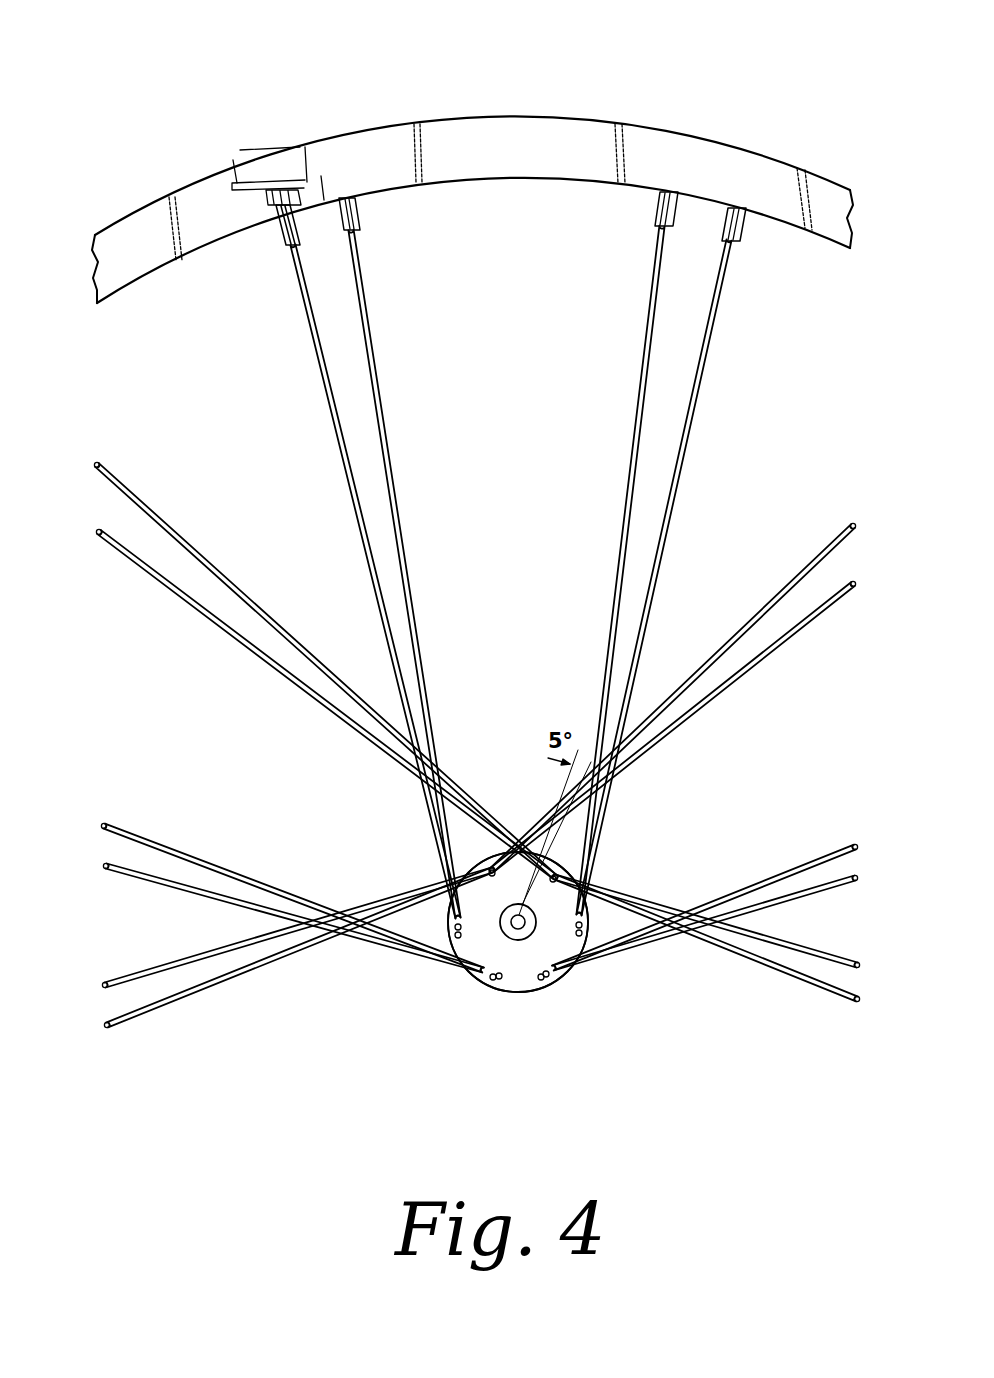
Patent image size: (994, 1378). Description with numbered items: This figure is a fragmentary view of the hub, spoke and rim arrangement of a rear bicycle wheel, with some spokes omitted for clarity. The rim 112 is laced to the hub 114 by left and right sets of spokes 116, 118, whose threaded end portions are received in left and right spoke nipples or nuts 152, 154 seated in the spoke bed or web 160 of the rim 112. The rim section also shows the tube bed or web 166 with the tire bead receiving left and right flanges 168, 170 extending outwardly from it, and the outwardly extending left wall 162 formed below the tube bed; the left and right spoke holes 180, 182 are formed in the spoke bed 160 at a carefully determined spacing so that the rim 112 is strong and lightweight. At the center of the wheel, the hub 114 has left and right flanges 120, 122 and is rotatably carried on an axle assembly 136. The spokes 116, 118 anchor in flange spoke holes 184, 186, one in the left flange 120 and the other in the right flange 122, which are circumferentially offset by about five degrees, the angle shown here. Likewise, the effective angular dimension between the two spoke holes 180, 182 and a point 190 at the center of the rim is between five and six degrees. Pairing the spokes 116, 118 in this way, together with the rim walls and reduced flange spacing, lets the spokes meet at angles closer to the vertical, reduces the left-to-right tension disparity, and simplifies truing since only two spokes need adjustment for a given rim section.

The rim 112 is at (834, 250).
The hub 114 is at (485, 967).
The left spokes 116 is at (138, 560).
The right spokes 118 is at (140, 572).
The left flange 120 is at (548, 988).
The right flange 122 is at (566, 978).
The axle assembly 136 is at (518, 922).
The left spoke nipple 152 is at (364, 228).
The right spoke nipple 154 is at (286, 247).
The spoke bed 160 is at (265, 238).
The left wall 162 is at (157, 232).
The tube bed 166 is at (243, 172).
The left tire bead receiving flange 168 is at (392, 138).
The right tire bead receiving flange 170 is at (245, 178).
The left spoke hole 180 is at (283, 196).
The right spoke hole 182 is at (365, 203).
The left flange spoke hole 184 is at (560, 872).
The right flange spoke hole 186 is at (519, 915).
The point at the center of the rim 190 is at (311, 150).